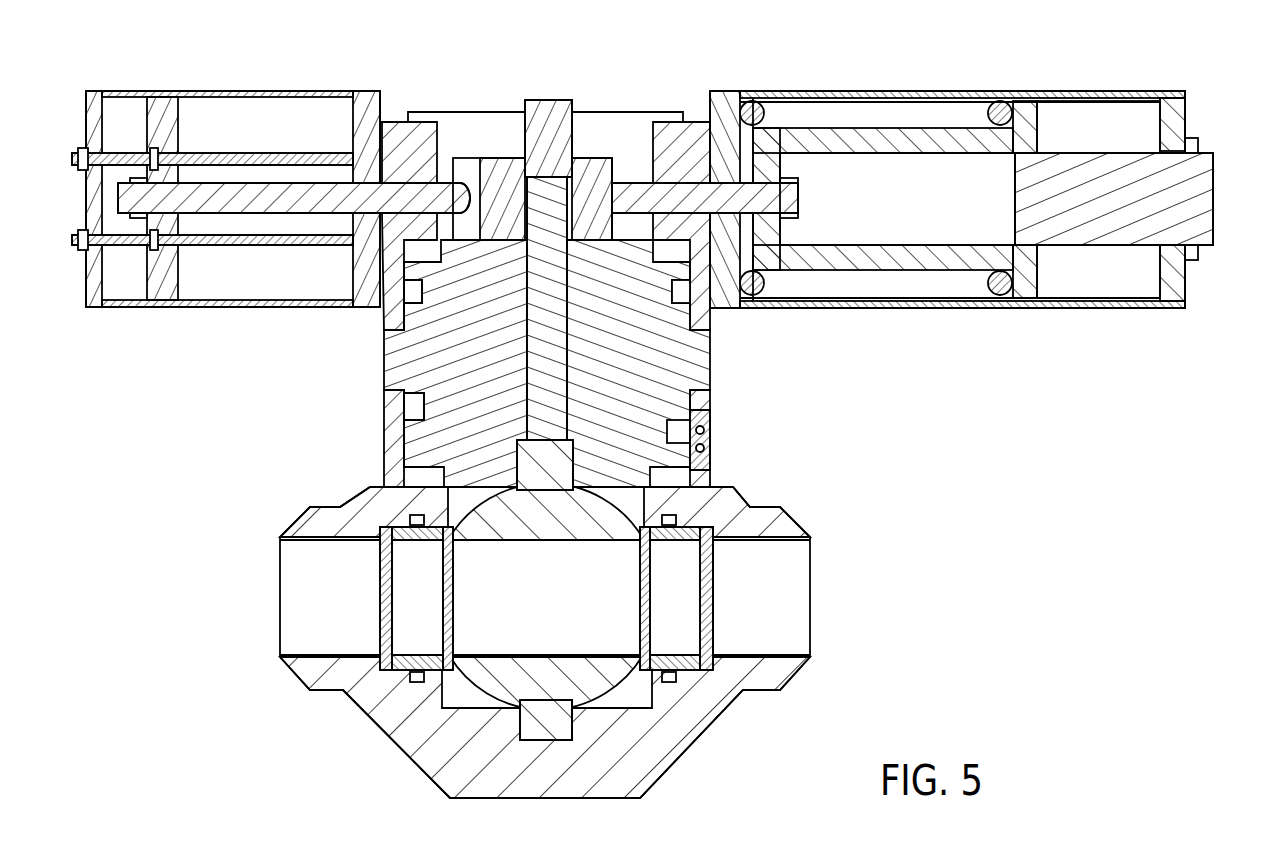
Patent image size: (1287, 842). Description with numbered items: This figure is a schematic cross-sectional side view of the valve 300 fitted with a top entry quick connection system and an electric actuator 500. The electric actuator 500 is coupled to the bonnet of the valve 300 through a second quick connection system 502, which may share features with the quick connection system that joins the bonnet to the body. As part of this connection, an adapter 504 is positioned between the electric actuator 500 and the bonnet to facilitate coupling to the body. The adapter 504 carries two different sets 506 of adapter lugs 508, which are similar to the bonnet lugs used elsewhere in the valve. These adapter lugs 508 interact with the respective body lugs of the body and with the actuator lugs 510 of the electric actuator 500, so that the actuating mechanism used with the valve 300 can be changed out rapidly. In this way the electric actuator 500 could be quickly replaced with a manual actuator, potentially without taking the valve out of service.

The valve 300 is at (1172, 55).
The electric actuator 500 is at (1148, 130).
The second quick connection system 502 is at (725, 328).
The adapter 504 is at (403, 372).
The sets of adapter lugs 506 is at (372, 410).
The adapter lugs 508 is at (413, 458).
The actuator lugs 510 is at (393, 290).